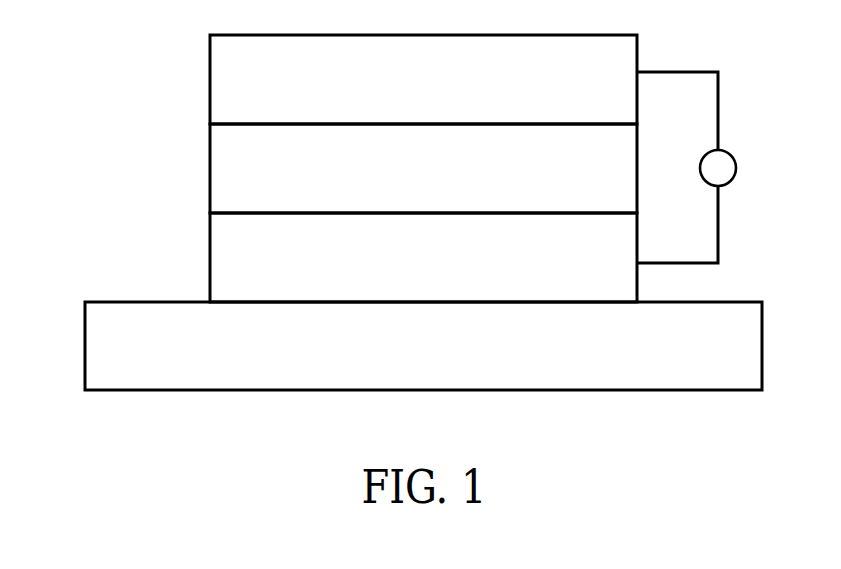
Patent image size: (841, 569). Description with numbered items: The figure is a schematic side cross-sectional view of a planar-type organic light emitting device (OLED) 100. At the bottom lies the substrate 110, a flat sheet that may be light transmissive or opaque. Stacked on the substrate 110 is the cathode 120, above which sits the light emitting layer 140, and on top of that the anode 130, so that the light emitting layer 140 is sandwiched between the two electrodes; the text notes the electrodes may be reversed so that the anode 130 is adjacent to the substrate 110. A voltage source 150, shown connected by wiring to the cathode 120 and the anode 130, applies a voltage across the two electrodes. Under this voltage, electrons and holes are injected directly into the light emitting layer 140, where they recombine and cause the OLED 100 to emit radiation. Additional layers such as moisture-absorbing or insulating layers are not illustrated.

The organic light emitting device 100 is at (722, 22).
The substrate 110 is at (85, 347).
The cathode 120 is at (210, 258).
The anode 130 is at (210, 87).
The light emitting layer 140 is at (210, 169).
The voltage source 150 is at (738, 167).